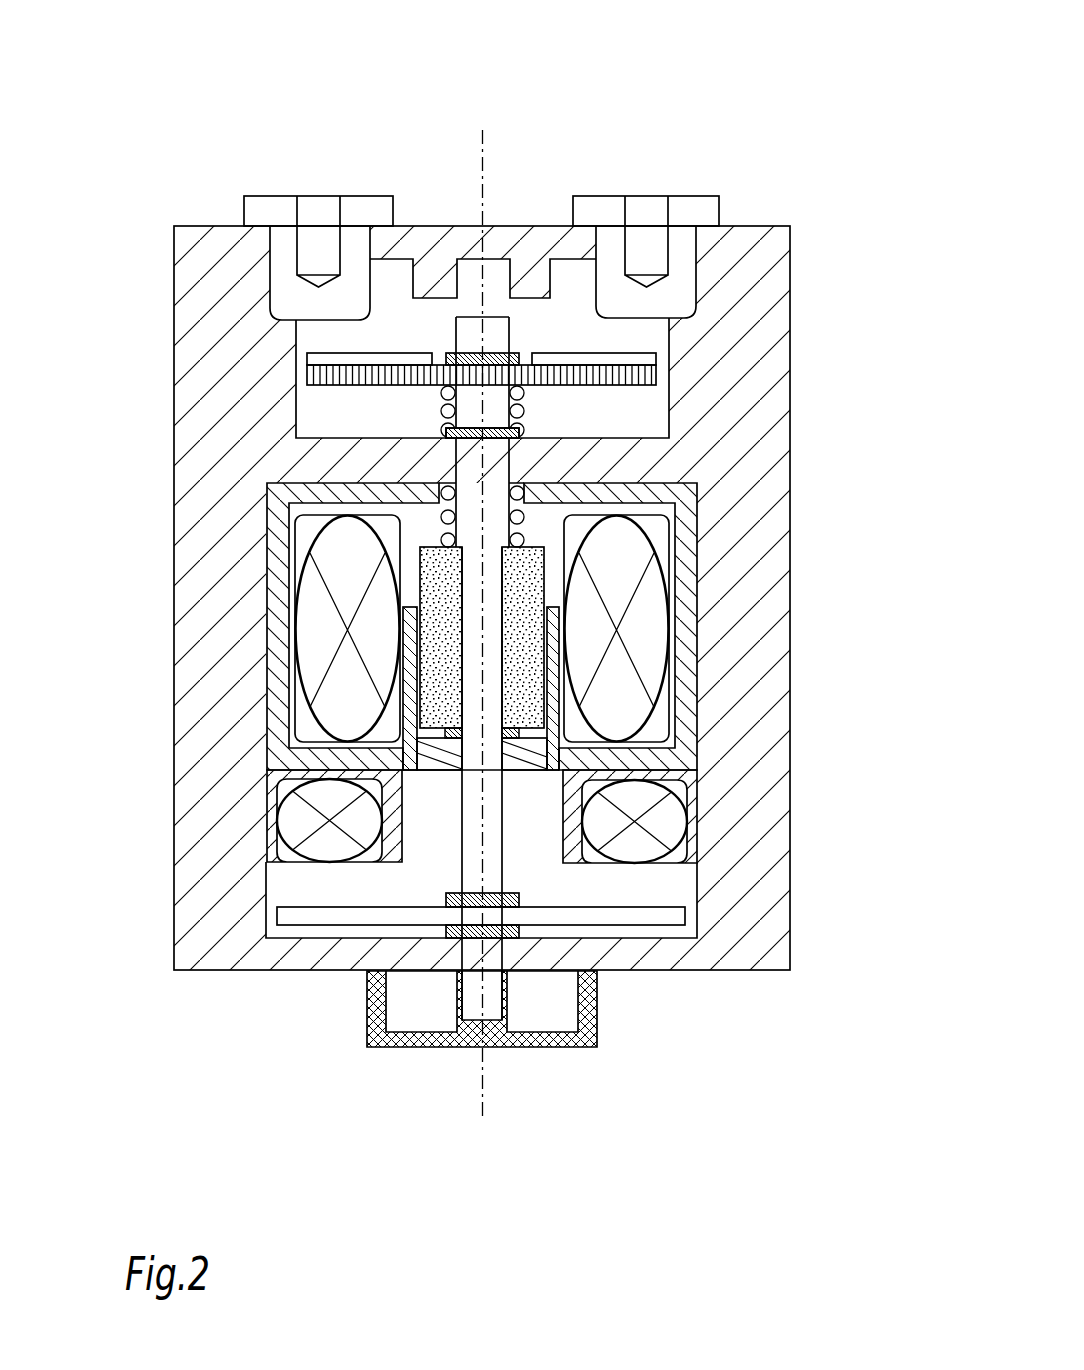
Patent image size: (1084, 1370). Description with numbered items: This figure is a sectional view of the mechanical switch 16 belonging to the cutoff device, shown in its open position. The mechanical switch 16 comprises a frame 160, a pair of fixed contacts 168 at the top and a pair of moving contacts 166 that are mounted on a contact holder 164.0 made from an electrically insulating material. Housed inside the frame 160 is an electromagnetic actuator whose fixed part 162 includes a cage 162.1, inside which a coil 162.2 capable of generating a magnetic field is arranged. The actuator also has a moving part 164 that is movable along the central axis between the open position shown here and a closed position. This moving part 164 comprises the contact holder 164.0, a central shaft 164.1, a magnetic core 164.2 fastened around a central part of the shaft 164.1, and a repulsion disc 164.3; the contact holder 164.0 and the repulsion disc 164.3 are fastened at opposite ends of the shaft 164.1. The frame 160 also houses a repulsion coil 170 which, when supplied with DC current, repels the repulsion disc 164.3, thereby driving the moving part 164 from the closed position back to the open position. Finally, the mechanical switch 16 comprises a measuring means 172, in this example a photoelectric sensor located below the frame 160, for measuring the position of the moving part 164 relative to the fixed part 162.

The mechanical switch 16 is at (501, 574).
The frame 160 is at (197, 387).
The fixed part 162 is at (370, 626).
The cage 162.1 is at (275, 570).
The coil 162.2 is at (322, 640).
The moving part 164 is at (618, 668).
The contact holder 164.0 is at (606, 375).
The central shaft 164.1 is at (498, 527).
The magnetic core 164.2 is at (525, 643).
The repulsion disc 164.3 is at (588, 824).
The moving contacts 166 is at (345, 357).
The fixed contacts 168 is at (613, 250).
The repulsion coil 170 is at (297, 826).
The measuring means 172 is at (617, 1022).